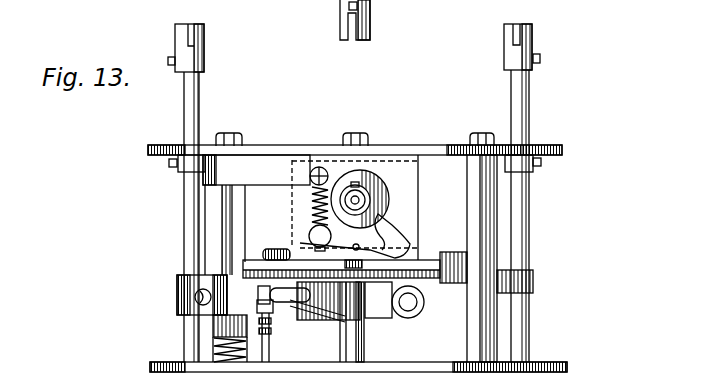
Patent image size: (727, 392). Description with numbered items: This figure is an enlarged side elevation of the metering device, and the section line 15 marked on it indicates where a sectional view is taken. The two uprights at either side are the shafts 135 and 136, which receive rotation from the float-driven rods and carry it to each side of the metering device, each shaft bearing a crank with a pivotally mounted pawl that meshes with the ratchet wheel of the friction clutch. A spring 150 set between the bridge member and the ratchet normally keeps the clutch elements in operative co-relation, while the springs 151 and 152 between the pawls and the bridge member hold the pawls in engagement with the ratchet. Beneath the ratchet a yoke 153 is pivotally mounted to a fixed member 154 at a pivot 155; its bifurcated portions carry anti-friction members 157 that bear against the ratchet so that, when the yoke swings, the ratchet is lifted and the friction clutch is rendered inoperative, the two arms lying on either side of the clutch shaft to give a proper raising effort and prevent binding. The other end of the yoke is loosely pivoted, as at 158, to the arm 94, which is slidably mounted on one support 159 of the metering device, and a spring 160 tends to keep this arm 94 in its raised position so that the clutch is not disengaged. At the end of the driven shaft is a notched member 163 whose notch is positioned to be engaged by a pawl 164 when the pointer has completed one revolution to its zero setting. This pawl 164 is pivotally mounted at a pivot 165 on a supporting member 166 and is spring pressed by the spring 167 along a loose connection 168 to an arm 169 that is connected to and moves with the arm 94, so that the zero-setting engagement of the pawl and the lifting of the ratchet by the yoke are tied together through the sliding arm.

The section line 15- 15 is at (147, 152).
The arm 94 is at (177, 297).
The shaft 135 is at (524, 103).
The shaft 136 is at (196, 91).
The spring 150 is at (400, 262).
The spring 151 is at (441, 252).
The spring 152 is at (268, 254).
The yoke 153 is at (386, 314).
The fixed member 154 is at (359, 355).
The pivot 155 is at (357, 304).
The anti-friction members 157 is at (424, 308).
The pivotal connection 158 is at (299, 314).
The support 159 is at (232, 134).
The spring 160 is at (228, 362).
The notched member 163 is at (373, 176).
The pawl 164 is at (395, 236).
The pivot 165 is at (309, 233).
The supporting member 166 is at (418, 183).
The spring 167 is at (312, 212).
The loose connection 168 is at (310, 192).
The arm 169 is at (257, 163).